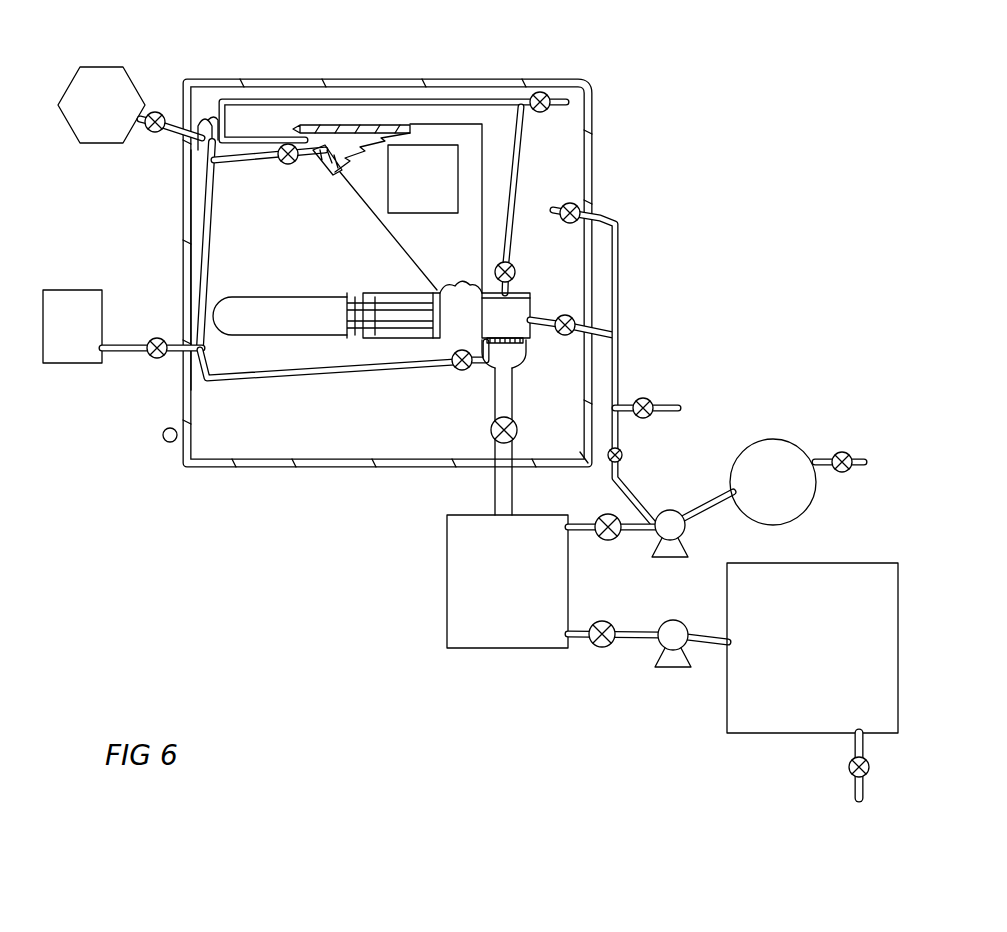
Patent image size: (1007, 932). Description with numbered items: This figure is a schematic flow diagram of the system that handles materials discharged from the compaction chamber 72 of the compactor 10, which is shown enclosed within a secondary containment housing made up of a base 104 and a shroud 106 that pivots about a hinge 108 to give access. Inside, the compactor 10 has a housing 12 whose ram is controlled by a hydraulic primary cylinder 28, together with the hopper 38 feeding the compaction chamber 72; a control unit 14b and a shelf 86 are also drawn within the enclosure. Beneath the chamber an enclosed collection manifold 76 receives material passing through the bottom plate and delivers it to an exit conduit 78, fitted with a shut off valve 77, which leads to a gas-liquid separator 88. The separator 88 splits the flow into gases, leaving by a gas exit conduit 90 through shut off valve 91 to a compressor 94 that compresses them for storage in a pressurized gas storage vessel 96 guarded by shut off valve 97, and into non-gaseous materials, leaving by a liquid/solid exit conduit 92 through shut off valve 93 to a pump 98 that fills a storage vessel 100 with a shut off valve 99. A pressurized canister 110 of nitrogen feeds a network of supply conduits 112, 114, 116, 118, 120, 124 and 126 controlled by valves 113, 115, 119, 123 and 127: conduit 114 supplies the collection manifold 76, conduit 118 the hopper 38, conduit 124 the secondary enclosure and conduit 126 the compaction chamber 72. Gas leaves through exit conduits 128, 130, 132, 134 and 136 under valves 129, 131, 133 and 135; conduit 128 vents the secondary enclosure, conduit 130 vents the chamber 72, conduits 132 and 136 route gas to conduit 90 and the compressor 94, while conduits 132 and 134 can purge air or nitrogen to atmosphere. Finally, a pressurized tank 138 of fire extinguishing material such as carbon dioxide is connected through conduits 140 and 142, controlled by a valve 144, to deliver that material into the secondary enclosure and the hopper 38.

The compactor 10 is at (443, 120).
The housing 12 is at (398, 292).
The control unit 14b is at (405, 190).
The hydraulic primary cylinder 28 is at (276, 297).
The hopper 38 is at (378, 232).
The compaction chamber 72 is at (517, 330).
The collection manifold 76 is at (528, 350).
The shut off valve 77 is at (518, 430).
The exit conduit 78 is at (516, 388).
The shelf 86 is at (333, 124).
The gas-liquid separator 88 is at (507, 581).
The gas exit conduit 90 is at (585, 533).
The shut off valve 91 is at (616, 541).
The liquid/solid exit conduit 92 is at (578, 650).
The shut off valve 93 is at (605, 648).
The compressor 94 is at (688, 535).
The pressurized gas storage vessel 96 is at (773, 482).
The shut off valve 97 is at (842, 453).
The pump 98 is at (679, 621).
The shut off valve 99 is at (847, 767).
The storage vessel 100 is at (812, 648).
The base 104 is at (231, 470).
The shroud 106 is at (185, 393).
The hinge 108 is at (163, 438).
The pressurized canister of nitrogen gas 110 is at (88, 335).
The nitrogen gas supply conduit 112 is at (122, 353).
The valve 113 is at (154, 339).
The nitrogen gas supply conduit 114 is at (259, 377).
The valve 115 is at (457, 370).
The nitrogen gas supply conduit 116 is at (214, 237).
The nitrogen gas supply conduit 118 is at (246, 166).
The valve 119 is at (292, 165).
The nitrogen gas supply conduit 120 is at (352, 102).
The valve 123 is at (540, 91).
The nitrogen gas supply conduit 124 is at (560, 102).
The nitrogen gas supply conduit 126 is at (512, 158).
The valve 127 is at (515, 270).
The gas exit conduit 128 is at (605, 216).
The valve 129 is at (568, 203).
The gas exit conduit 130 is at (615, 330).
The valve 131 is at (567, 315).
The gas exit conduit 132 is at (621, 270).
The valve 133 is at (648, 400).
The gas exit conduit 134 is at (666, 405).
The valve 135 is at (623, 455).
The gas exit conduit 136 is at (620, 489).
The pressurized tank 138 is at (101, 105).
The conduit 140 is at (258, 139).
The conduit 142 is at (196, 152).
The valve 144 is at (158, 113).